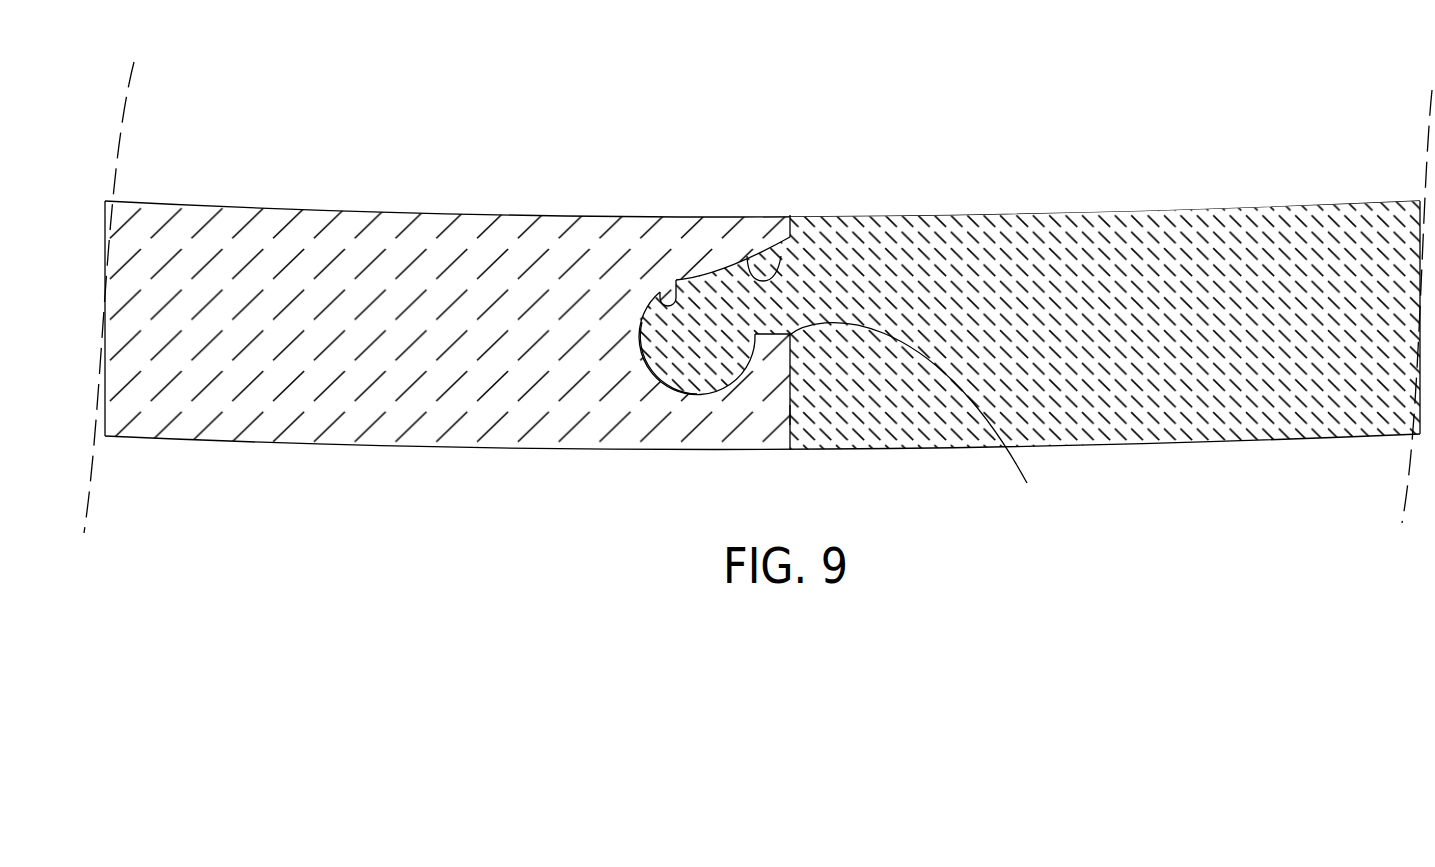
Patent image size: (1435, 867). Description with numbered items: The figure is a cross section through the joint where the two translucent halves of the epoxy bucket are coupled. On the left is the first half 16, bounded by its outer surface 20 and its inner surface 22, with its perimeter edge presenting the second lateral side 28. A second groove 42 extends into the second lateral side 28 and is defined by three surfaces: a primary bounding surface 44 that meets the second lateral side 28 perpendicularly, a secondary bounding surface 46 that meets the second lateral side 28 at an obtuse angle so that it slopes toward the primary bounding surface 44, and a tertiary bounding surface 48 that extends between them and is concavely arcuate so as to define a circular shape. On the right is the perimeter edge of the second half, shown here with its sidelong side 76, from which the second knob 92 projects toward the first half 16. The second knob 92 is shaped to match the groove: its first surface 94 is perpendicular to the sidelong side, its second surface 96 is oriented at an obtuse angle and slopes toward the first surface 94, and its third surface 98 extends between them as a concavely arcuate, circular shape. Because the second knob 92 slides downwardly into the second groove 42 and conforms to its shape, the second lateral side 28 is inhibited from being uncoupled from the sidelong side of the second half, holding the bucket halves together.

The first half 16 is at (470, 178).
The outer surface 20 is at (542, 450).
The inner surface 22 is at (393, 213).
The second lateral side 28 is at (790, 415).
The second groove 42 is at (793, 297).
The primary bounding surface 44 is at (917, 417).
The secondary bounding surface 46 is at (781, 256).
The tertiary bounding surface 48 is at (676, 280).
The first sidelong side 76 is at (790, 383).
The second knob 92 is at (630, 405).
The first surface 94 is at (760, 334).
The second surface 96 is at (725, 272).
The third surface 98 is at (642, 322).